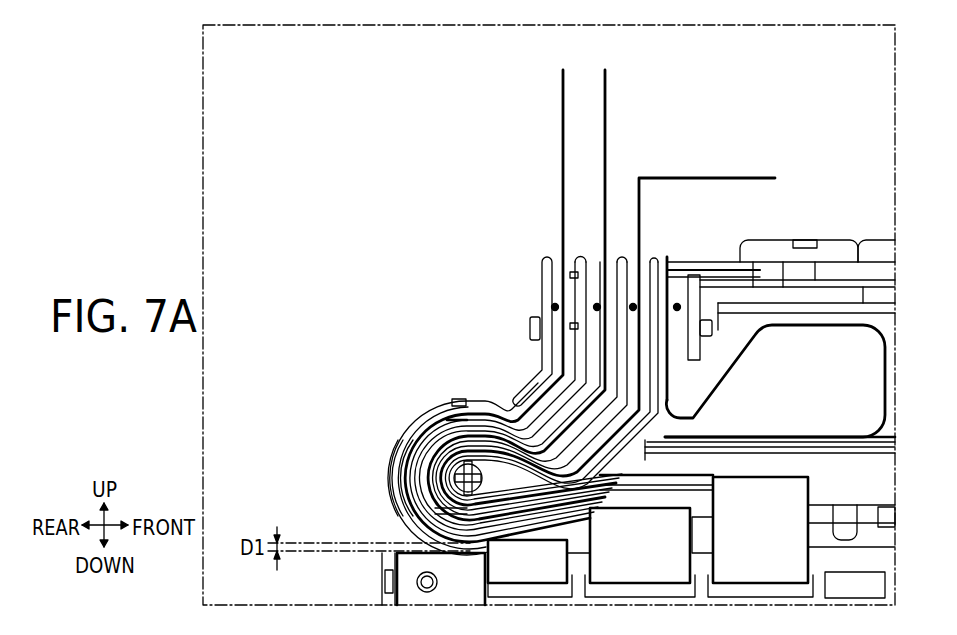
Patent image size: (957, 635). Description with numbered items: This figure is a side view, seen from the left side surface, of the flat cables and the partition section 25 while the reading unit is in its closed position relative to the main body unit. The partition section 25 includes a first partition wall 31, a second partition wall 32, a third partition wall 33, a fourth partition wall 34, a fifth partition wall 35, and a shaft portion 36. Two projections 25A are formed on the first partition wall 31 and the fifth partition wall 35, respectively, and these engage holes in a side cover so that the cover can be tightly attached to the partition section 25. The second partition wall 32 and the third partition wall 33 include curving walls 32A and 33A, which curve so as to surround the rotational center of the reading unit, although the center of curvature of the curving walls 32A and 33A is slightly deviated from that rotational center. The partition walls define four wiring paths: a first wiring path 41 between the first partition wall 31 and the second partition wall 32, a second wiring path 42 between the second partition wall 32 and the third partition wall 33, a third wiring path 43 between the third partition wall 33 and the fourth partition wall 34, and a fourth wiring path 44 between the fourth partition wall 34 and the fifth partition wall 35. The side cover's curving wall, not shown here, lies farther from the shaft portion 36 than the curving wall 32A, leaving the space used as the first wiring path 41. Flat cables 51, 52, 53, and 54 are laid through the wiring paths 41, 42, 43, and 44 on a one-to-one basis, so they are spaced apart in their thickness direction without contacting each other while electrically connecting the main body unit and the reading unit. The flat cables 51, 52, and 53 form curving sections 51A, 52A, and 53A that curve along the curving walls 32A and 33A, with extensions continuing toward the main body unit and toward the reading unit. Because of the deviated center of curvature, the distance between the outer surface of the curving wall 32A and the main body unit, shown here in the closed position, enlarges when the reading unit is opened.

The partition section 25 is at (470, 378).
The projection 25A is at (530, 324).
The first partition wall 31 is at (547, 258).
The second partition wall 32 is at (459, 372).
The third partition wall 33 is at (623, 258).
The fourth partition wall 34 is at (661, 256).
The fifth partition wall 35 is at (697, 262).
The shaft portion 36 is at (483, 481).
The first wiring path 41 is at (555, 307).
The second wiring path 42 is at (597, 307).
The third wiring path 43 is at (633, 307).
The fourth wiring path 44 is at (677, 307).
The flat cable 51 is at (563, 178).
The flat cable 52 is at (605, 178).
The flat cable 53 is at (639, 178).
The flat cable 54 is at (727, 378).
The curving wall 32A is at (432, 440).
The curving wall 33A is at (458, 423).
The curving section 51A is at (408, 454).
The curving section 52A is at (397, 480).
The curving section 53A is at (394, 498).